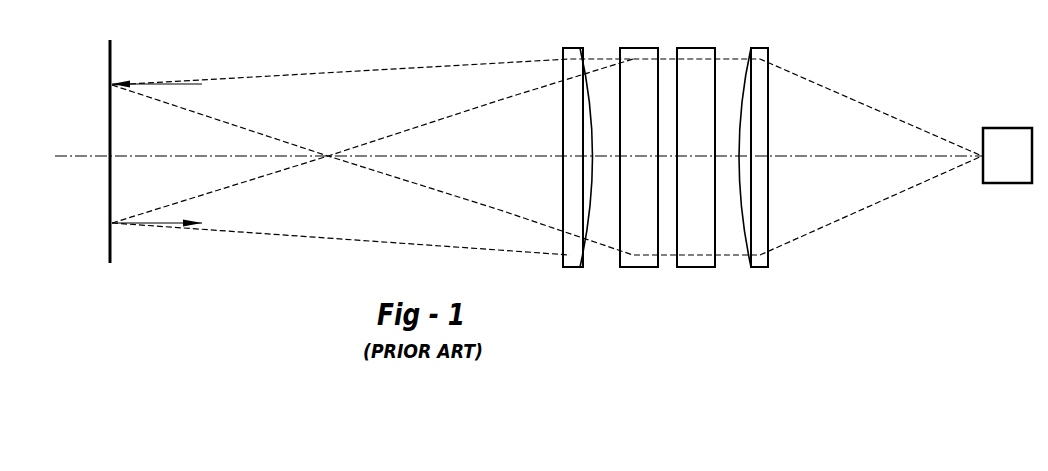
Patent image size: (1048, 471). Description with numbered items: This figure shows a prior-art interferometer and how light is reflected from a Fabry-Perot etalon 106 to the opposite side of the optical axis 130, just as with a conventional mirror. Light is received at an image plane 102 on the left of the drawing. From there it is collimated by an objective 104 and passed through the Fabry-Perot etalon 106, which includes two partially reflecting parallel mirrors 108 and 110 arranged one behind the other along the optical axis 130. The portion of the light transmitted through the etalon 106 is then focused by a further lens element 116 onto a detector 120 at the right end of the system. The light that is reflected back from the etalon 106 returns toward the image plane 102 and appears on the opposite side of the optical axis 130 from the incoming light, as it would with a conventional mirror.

The image plane 102 is at (108, 132).
The objective 104 is at (575, 48).
The Fabry-Perot etalon 106 is at (639, 173).
The partially reflecting parallel mirror 108 is at (635, 48).
The partially reflecting parallel mirror 110 is at (693, 48).
The second lens 116 is at (765, 48).
The detector 120 is at (1007, 137).
The optical axis 130 is at (93, 157).